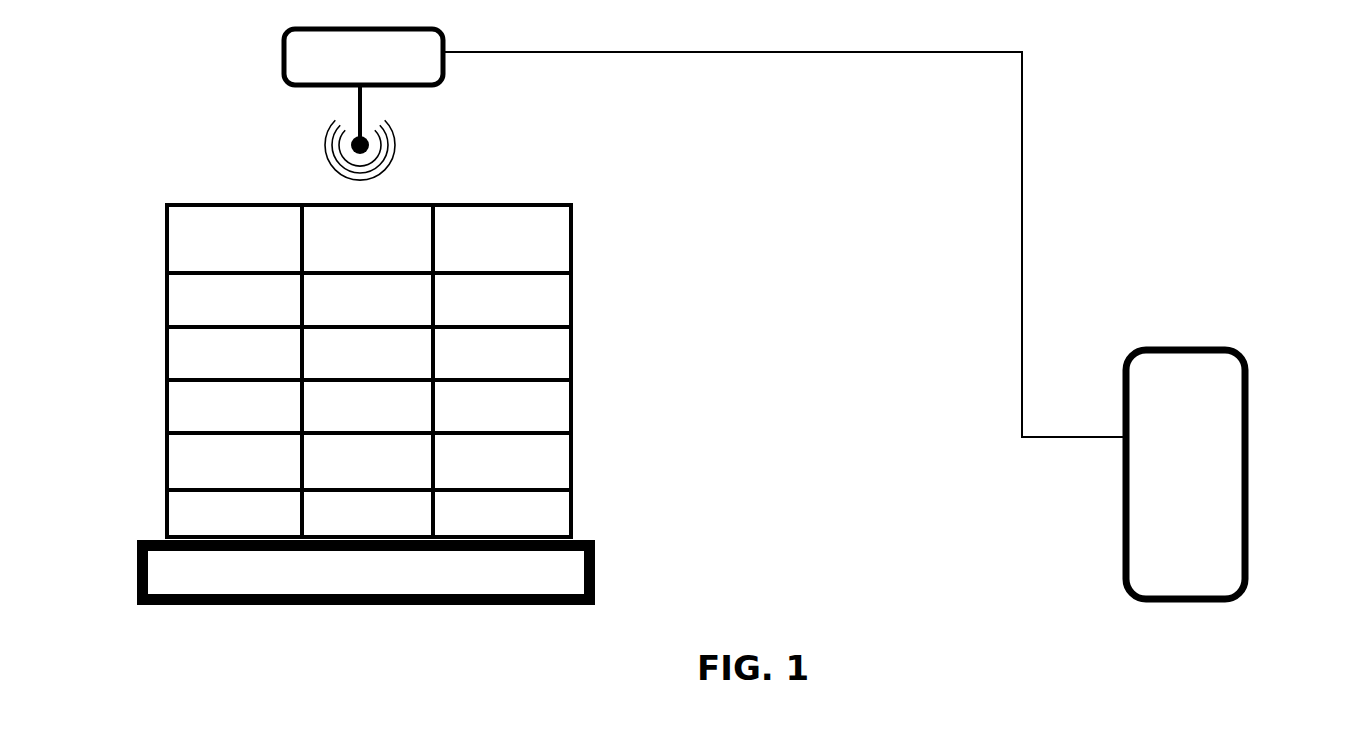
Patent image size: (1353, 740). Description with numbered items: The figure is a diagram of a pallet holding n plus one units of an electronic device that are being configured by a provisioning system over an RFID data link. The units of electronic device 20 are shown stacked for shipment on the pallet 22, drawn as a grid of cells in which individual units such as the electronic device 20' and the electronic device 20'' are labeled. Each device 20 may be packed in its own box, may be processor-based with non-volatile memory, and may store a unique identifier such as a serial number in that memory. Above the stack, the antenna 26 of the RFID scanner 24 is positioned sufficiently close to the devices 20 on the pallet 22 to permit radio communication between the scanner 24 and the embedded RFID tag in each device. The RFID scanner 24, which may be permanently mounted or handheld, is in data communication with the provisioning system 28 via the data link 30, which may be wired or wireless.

The electronic device 20 is at (318, 371).
The electronic device 20' is at (246, 220).
The electronic device 20'' is at (546, 239).
The pallet 22 is at (597, 569).
The RFID scanner 24 is at (298, 52).
The antenna 26 is at (364, 101).
The provisioning system 28 is at (1250, 441).
The data link 30 is at (1023, 162).